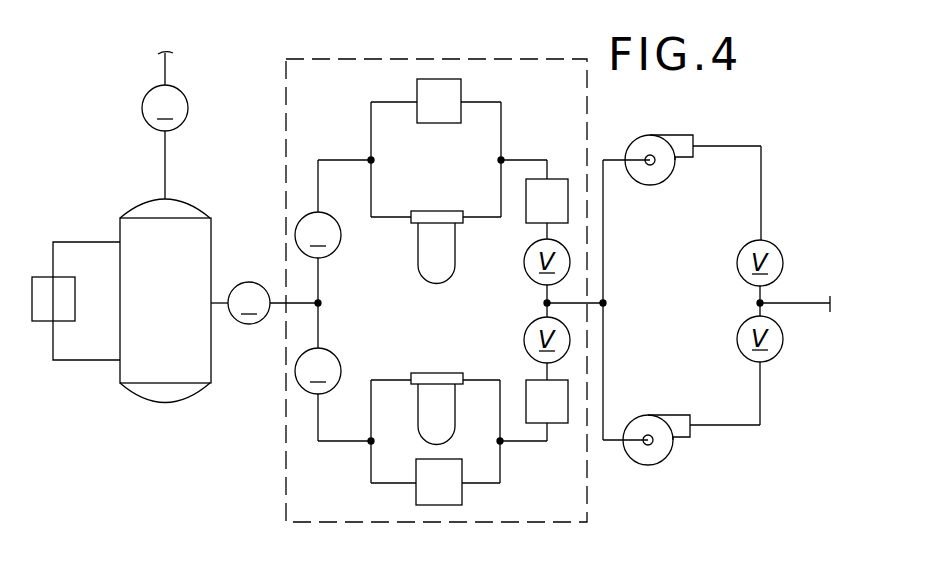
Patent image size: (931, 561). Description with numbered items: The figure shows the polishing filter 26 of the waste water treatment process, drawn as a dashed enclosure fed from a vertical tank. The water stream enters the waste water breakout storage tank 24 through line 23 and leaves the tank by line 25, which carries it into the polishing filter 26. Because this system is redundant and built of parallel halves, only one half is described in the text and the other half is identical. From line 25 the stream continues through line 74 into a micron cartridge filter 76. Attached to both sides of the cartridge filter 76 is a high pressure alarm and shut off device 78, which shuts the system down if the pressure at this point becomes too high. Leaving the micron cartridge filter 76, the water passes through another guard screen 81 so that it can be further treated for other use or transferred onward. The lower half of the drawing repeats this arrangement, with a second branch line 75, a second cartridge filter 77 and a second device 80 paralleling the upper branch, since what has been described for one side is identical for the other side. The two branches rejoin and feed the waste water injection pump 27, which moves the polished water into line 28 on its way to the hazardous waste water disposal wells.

The line 23 is at (165, 155).
The waste water breakout storage tank 24 is at (186, 312).
The line 25 is at (218, 302).
The polishing filter 26 is at (320, 59).
The waste water injection pump 27 is at (651, 137).
The line 28 is at (816, 305).
The line 74 is at (319, 197).
The valve 75 is at (320, 340).
The micron cartridge filter 76 is at (432, 215).
The sample cell 77 is at (433, 372).
The high pressure alarm and shut off device 78 is at (452, 111).
The detector 80 is at (560, 412).
The guard screen 81 is at (560, 211).